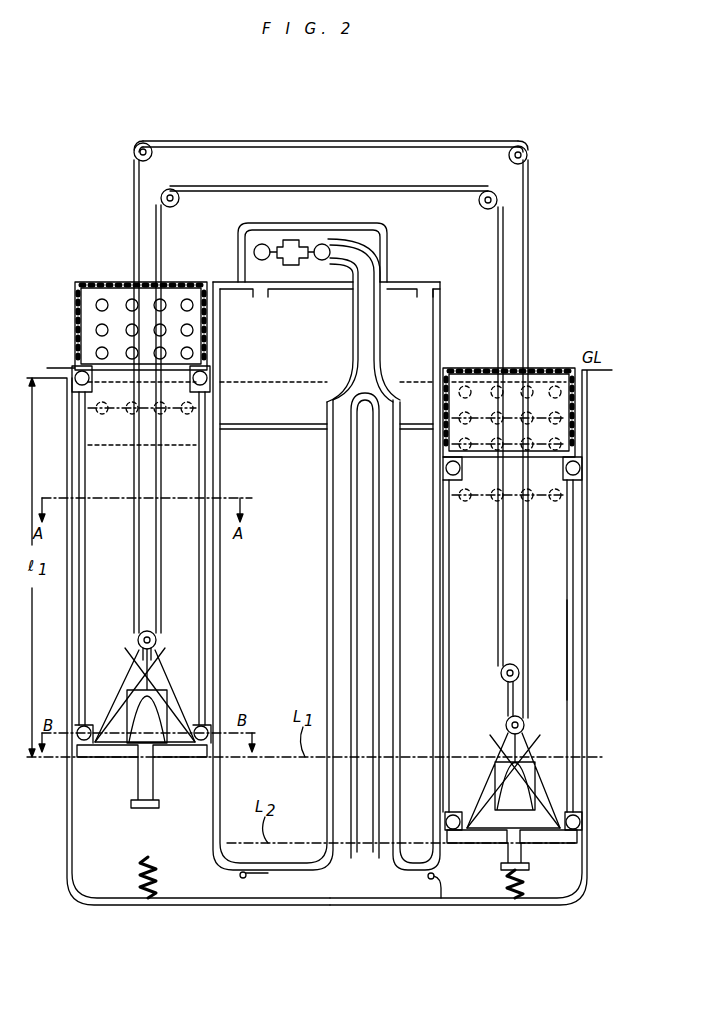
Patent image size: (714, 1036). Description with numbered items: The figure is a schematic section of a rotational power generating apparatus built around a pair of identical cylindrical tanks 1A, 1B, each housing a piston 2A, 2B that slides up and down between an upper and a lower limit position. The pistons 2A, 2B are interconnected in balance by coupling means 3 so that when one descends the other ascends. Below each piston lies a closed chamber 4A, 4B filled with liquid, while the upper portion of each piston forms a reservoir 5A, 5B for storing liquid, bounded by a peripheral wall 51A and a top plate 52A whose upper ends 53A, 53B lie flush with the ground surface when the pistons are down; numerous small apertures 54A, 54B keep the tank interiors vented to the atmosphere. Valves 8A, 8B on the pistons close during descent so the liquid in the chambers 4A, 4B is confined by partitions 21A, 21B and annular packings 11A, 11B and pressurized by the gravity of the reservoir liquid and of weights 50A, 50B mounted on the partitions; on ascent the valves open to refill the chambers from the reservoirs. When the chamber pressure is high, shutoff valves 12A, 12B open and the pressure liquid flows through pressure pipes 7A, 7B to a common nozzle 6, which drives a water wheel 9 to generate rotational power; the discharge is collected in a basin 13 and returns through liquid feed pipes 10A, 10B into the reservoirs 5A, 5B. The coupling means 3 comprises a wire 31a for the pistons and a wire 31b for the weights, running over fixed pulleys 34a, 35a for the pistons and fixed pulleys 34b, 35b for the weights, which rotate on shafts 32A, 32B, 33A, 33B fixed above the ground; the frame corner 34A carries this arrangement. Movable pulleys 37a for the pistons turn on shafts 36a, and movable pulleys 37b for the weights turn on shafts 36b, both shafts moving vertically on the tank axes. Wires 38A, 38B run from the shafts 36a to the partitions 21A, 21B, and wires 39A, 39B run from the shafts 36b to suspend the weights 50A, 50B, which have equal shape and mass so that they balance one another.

The tank 1A is at (73, 822).
The tank 1B is at (587, 575).
The piston 2A is at (73, 293).
The piston 2B is at (575, 635).
The coupling means 3 is at (352, 141).
The closed chamber 4A is at (110, 863).
The closed chamber 4B is at (560, 871).
The reservoir 5A is at (118, 569).
The reservoir 5B is at (558, 533).
The nozzle 6 is at (331, 246).
The pressure pipe 7A is at (320, 878).
The pressure pipe 7B is at (405, 878).
The valve 8A is at (120, 715).
The valve 8B is at (532, 790).
The water wheel 9 is at (306, 246).
The liquid feed pipe 10A is at (227, 375).
The liquid feed pipe 10B is at (433, 358).
The annular packing 11A is at (78, 371).
The annular packing 11B is at (557, 468).
The shutoff valve 12A is at (243, 879).
The shutoff valve 12B is at (434, 882).
The basin 13 is at (292, 380).
The partition 21A is at (190, 758).
The partition 21B is at (500, 845).
The wire 31a is at (529, 222).
The wire 31b is at (529, 250).
The shaft 32A is at (152, 145).
The shaft 32B is at (512, 147).
The shaft 33A is at (172, 207).
The shaft 33B is at (482, 206).
The pulley (A) 34A is at (137, 147).
The fixed pulley 34a is at (522, 146).
The fixed pulley 34b is at (144, 145).
The fixed pulley 35a is at (178, 198).
The fixed pulley 35b is at (195, 170).
The shaft 36a is at (156, 640).
The shaft 36b is at (505, 665).
The movable pulley 37a is at (152, 633).
The movable pulley 37b is at (506, 715).
The wire 38A is at (150, 665).
The wire 38B is at (495, 765).
The wire 39A is at (150, 690).
The wire 39B is at (520, 725).
The weight 50A is at (130, 650).
The weight 50B is at (498, 735).
The peripheral wall 51A is at (80, 283).
The top plate 52A is at (95, 283).
The upper end 53A is at (192, 283).
The upper end 53B is at (548, 368).
The small apertures 54A is at (110, 283).
The small apertures 54B is at (557, 392).